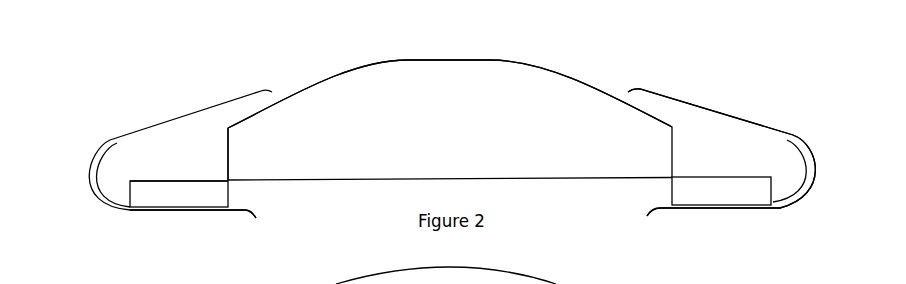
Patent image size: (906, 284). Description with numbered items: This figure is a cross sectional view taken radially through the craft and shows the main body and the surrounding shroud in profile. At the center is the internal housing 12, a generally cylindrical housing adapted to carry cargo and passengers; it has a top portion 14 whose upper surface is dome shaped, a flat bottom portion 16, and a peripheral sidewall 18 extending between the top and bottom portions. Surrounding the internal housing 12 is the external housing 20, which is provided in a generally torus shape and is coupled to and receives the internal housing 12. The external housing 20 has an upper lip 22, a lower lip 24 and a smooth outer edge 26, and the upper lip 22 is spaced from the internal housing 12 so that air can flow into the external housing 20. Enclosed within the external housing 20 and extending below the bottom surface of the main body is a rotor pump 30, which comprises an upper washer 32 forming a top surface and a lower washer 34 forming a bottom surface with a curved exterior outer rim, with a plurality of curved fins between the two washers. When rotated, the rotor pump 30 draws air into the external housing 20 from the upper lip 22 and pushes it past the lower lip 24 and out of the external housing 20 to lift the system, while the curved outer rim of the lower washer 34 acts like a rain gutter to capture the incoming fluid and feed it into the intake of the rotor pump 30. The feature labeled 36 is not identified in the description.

The internal housing 12 is at (450, 120).
The top portion 14 is at (345, 72).
The bottom portion 16 is at (380, 178).
The peripheral sidewall 18 is at (235, 153).
The external housing 20 is at (721, 152).
The upper lip 22 is at (640, 85).
The lower lip 24 is at (665, 215).
The smooth outer edge 26 is at (762, 122).
The rotor pump 30 is at (179, 194).
The upper washer 32 is at (193, 175).
The lower washer 34 is at (168, 208).
The rounded end of left portion 36 is at (87, 170).